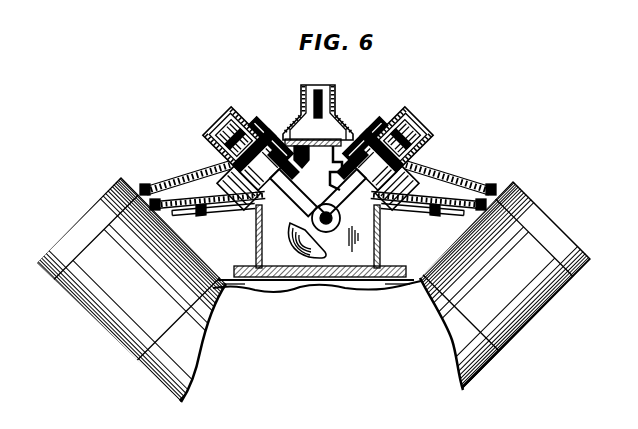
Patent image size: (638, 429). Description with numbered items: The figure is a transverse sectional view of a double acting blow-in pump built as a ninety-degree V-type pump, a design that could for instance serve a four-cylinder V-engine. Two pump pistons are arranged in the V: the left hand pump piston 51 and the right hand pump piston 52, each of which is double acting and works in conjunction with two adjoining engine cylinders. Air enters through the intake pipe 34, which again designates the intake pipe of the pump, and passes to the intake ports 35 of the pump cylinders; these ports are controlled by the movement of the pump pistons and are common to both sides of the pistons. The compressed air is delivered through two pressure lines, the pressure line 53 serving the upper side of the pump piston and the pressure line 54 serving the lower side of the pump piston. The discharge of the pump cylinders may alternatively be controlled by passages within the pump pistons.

The intake pipe 34 is at (325, 101).
The intake ports 35 is at (294, 129).
The left hand pump piston 51 is at (274, 130).
The right hand pump piston 52 is at (373, 130).
The pressure line for the upper side of the pump piston 53 is at (452, 179).
The pressure line for the lower side of the pump piston 54 is at (402, 218).